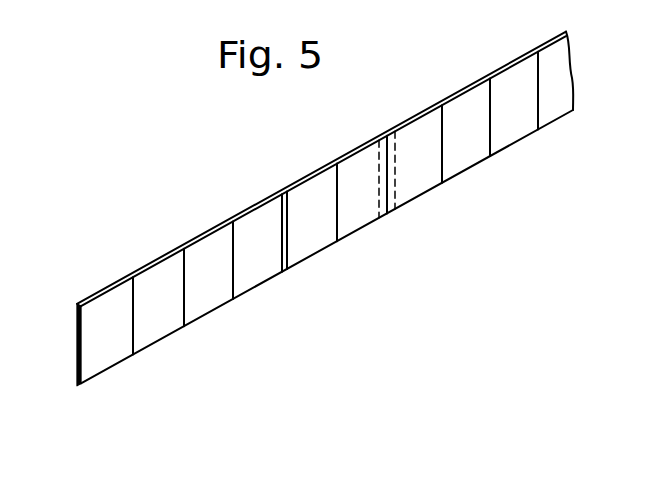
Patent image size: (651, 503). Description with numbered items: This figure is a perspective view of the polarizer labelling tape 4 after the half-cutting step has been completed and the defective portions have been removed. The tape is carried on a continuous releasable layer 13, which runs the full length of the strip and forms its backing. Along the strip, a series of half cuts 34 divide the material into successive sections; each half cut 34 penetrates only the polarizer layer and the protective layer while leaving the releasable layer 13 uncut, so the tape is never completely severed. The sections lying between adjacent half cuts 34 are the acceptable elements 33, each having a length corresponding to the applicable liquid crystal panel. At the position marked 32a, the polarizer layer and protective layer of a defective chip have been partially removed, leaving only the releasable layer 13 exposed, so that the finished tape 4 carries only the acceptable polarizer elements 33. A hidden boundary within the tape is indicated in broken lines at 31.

The polarizer labelling tape 4 is at (140, 251).
The releasable layer 13 is at (88, 300).
The hidden partition line 31 is at (397, 152).
The removed defective chip portion 32a is at (257, 263).
The acceptable element 33 is at (100, 355).
The half cut 34 is at (133, 323).